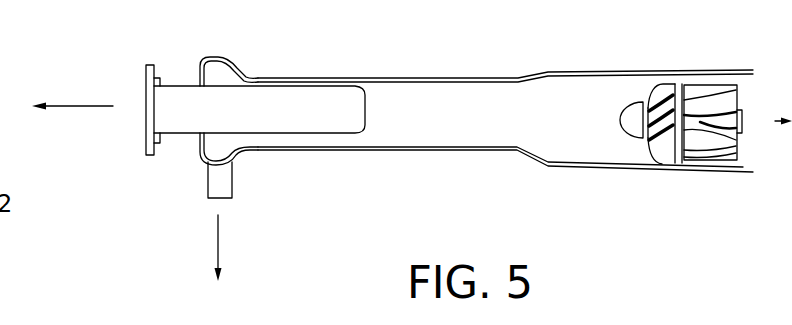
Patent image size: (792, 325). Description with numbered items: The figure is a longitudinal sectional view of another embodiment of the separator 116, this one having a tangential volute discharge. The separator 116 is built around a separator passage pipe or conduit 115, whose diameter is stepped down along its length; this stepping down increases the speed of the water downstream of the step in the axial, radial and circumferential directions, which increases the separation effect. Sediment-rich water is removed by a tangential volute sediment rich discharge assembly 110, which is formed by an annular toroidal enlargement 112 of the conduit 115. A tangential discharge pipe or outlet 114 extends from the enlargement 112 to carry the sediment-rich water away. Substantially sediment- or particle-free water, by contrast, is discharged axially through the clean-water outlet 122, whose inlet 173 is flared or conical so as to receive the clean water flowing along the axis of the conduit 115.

The tangential volute sediment rich discharge assembly 110 is at (221, 60).
The annular toroidal enlargement 112 is at (200, 153).
The tangential discharge pipe 114 is at (233, 187).
The separator passage conduit 115 is at (548, 97).
The separator 116 is at (529, 182).
The clean-water outlet 122 is at (181, 86).
The inlet of discharge 173 is at (367, 125).